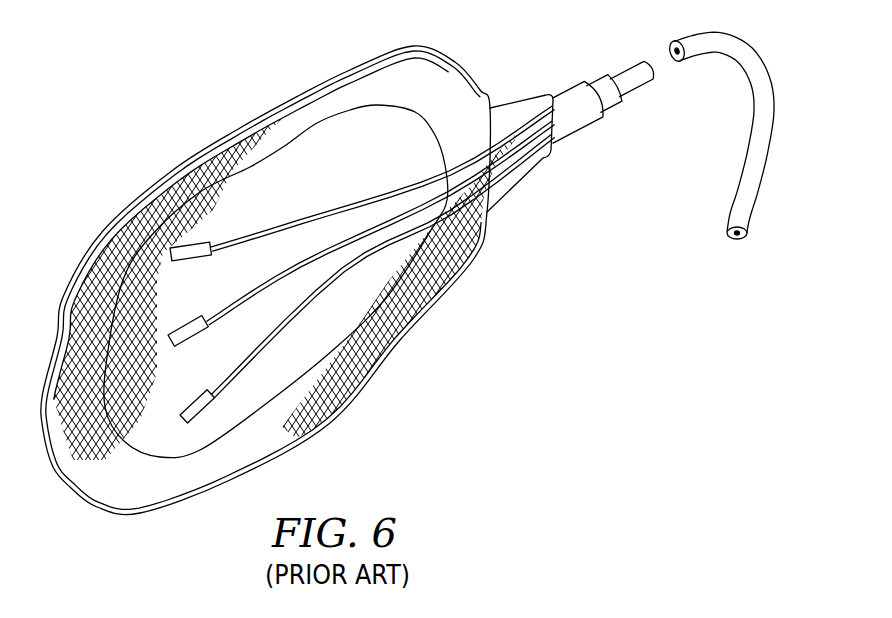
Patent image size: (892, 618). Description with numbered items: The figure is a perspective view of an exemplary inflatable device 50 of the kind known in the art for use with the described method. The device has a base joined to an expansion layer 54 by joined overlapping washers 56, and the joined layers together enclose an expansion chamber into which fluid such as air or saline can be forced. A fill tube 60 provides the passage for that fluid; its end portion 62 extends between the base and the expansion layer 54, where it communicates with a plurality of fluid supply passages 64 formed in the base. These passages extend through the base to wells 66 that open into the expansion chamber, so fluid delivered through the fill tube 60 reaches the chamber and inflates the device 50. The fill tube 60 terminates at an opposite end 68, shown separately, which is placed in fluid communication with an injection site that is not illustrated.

The inflatable device 50 is at (347, 260).
The expansion layer 54 is at (412, 125).
The joined overlapping washers 56 is at (395, 72).
The fill tube 60 is at (720, 135).
The end portion 62 is at (588, 105).
The fluid supply passages 64 is at (378, 200).
The wells 66 is at (190, 261).
The opposite end 68 is at (730, 213).